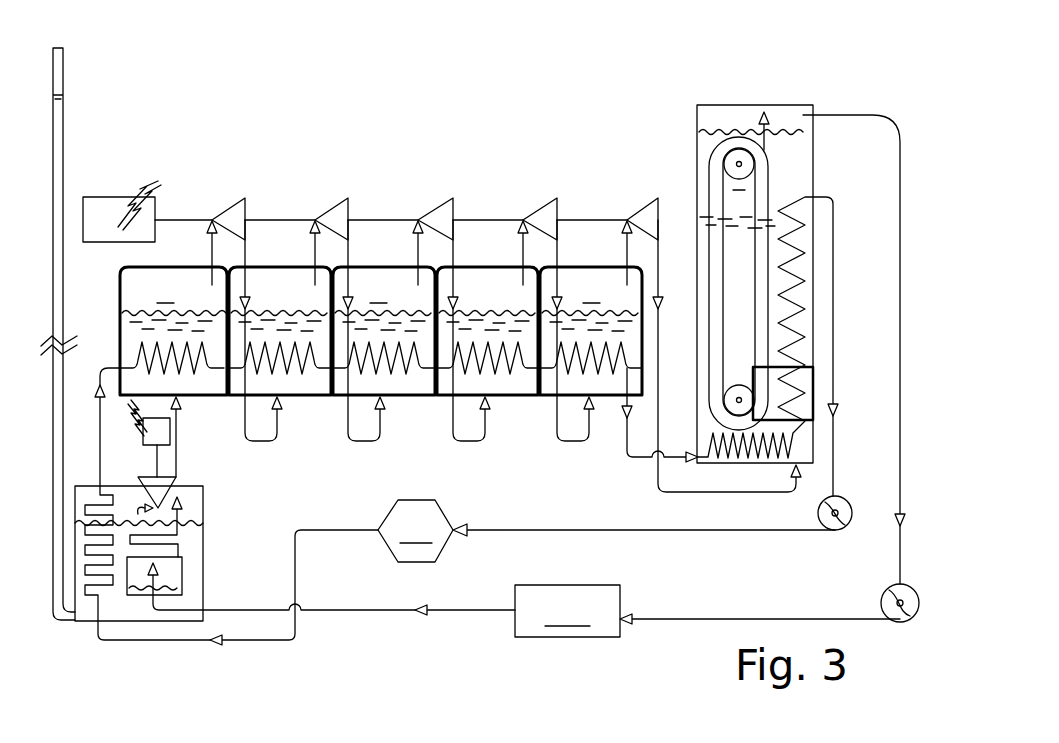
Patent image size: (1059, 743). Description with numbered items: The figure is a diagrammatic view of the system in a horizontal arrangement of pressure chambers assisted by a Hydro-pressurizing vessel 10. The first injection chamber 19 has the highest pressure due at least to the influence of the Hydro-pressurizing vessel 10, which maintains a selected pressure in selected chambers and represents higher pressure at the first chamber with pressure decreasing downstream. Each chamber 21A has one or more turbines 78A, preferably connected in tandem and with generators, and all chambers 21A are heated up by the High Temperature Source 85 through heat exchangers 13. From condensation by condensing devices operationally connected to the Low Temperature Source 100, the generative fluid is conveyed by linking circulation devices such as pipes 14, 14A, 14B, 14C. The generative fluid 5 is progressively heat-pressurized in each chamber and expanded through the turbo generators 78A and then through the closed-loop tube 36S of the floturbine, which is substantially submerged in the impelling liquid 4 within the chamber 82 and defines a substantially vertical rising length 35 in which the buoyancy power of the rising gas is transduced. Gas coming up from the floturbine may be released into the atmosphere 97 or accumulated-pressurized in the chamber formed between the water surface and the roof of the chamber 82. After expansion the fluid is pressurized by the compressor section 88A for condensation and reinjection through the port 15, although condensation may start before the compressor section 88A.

The Hydro-pressurizing vessel 10 is at (63, 165).
The atmosphere 97 is at (257, 155).
The pipe 14B is at (312, 247).
The turbine 78A is at (448, 212).
The chamber 21A is at (488, 267).
The closed-loop tube 36S is at (718, 140).
The rising length 35 is at (763, 183).
The impelling liquid 4 is at (748, 336).
The generative fluid 5 is at (381, 331).
The heat exchanger 13 is at (793, 290).
The chamber 82 is at (813, 325).
The pipe 14A is at (178, 417).
The pipe 14C is at (357, 437).
The first injection chamber 19 is at (204, 505).
The port 15 is at (155, 572).
The High Temperature Source 85 is at (422, 531).
The Low Temperature Source 100 is at (573, 611).
The compressor section 88A is at (882, 610).
The pipe 14 is at (382, 611).